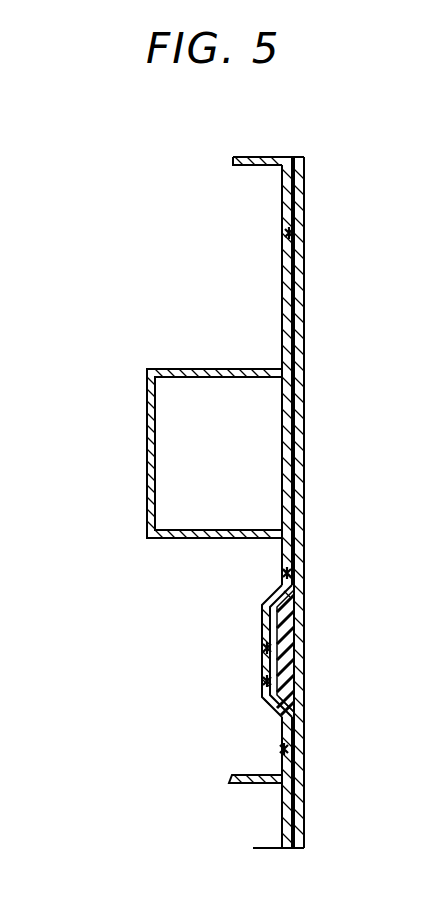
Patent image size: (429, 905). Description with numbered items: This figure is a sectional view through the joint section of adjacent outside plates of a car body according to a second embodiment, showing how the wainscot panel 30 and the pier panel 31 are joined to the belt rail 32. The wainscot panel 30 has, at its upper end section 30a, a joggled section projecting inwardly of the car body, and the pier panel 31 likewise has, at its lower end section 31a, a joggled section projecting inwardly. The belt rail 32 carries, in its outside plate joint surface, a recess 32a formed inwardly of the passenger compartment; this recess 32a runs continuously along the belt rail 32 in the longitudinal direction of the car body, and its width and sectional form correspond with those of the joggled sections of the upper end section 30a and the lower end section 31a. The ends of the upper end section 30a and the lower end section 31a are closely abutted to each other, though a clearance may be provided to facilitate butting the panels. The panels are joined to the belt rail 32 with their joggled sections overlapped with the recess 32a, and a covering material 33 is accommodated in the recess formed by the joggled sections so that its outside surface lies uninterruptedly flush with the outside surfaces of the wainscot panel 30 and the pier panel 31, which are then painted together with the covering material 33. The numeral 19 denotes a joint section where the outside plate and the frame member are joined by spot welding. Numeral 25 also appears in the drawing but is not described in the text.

The joint section 19 is at (285, 232).
The panel wall 25 is at (298, 502).
The wainscot panel 30 is at (292, 792).
The upper end section 30a is at (276, 668).
The pier panel 31 is at (296, 417).
The lower end section 31a is at (280, 616).
The belt rail 32 is at (147, 403).
The recess 32a is at (260, 658).
The covering material 33 is at (300, 708).